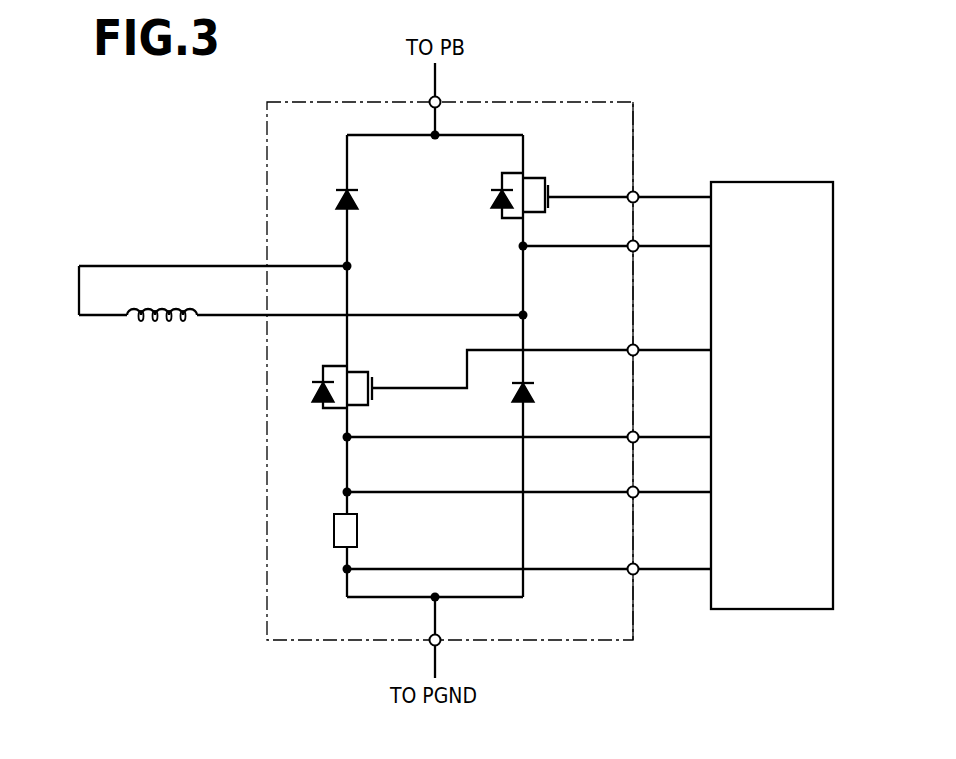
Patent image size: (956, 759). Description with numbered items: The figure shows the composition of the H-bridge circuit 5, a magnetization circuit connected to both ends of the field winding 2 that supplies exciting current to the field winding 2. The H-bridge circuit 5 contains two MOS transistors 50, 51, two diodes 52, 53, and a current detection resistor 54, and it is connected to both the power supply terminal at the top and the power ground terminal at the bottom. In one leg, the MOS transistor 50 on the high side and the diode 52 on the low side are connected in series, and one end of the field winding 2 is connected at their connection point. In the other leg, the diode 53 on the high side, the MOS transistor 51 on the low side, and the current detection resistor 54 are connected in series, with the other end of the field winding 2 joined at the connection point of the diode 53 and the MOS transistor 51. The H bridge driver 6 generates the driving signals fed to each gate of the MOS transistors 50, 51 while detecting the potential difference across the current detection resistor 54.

The field winding 2 is at (163, 322).
The H-bridge circuit 5 is at (623, 102).
The H bridge driver 6 is at (758, 182).
The MOS transistor 50 is at (502, 182).
The MOS transistor 51 is at (328, 412).
The diode 52 is at (534, 387).
The diode 53 is at (338, 188).
The current detection resistor 54 is at (338, 547).